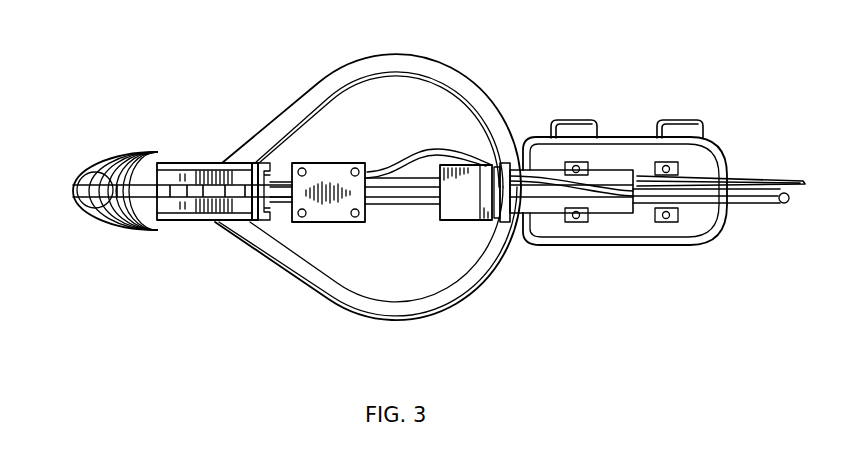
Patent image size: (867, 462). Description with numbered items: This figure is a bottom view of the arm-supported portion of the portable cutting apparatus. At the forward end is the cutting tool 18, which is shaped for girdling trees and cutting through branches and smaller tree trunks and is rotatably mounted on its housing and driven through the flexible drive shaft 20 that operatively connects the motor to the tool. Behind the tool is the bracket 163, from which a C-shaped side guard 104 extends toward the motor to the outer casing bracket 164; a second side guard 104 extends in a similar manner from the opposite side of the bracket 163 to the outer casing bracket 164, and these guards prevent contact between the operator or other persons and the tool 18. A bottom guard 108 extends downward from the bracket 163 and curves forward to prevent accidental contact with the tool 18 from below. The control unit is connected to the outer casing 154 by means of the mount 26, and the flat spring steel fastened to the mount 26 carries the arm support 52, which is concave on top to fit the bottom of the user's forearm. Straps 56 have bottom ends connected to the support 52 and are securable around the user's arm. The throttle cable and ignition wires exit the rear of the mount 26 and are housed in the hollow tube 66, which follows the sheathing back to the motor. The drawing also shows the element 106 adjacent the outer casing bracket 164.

The cutting tool 18 is at (119, 153).
The bracket 163 is at (171, 170).
The bottom guard 108 is at (224, 188).
The outer casing 154 is at (283, 187).
The side guard 104 is at (322, 85).
The mount 26 is at (340, 173).
The outer casing bracket 164 is at (467, 193).
The carriage 106 is at (553, 200).
The arm support 52 is at (664, 252).
The straps 56 is at (570, 121).
The hollow tube 66 is at (791, 175).
The flexible drive shaft 20 is at (764, 204).